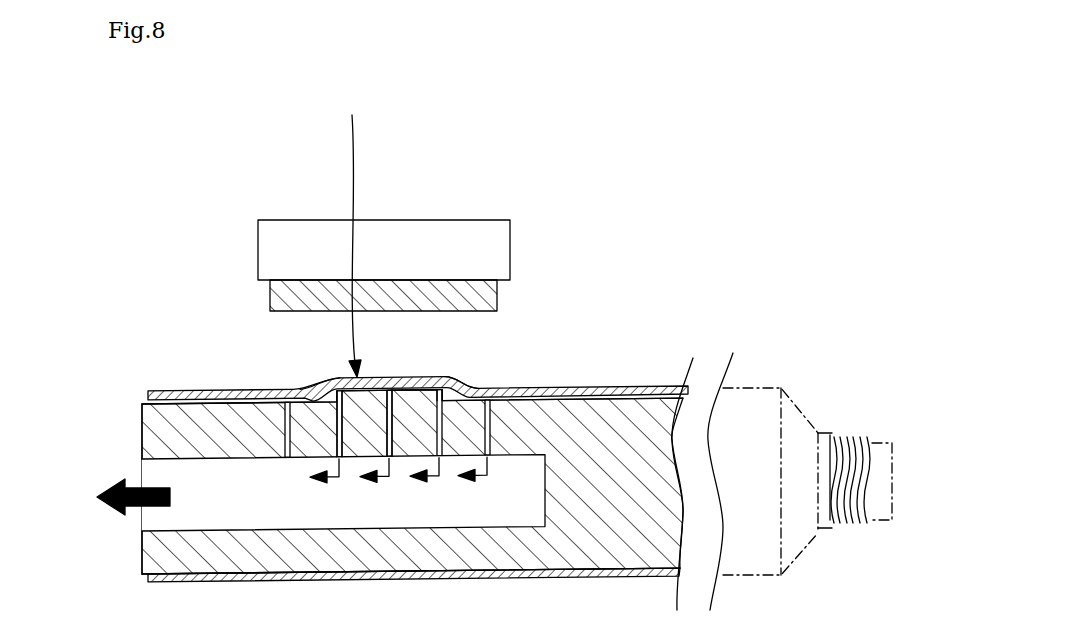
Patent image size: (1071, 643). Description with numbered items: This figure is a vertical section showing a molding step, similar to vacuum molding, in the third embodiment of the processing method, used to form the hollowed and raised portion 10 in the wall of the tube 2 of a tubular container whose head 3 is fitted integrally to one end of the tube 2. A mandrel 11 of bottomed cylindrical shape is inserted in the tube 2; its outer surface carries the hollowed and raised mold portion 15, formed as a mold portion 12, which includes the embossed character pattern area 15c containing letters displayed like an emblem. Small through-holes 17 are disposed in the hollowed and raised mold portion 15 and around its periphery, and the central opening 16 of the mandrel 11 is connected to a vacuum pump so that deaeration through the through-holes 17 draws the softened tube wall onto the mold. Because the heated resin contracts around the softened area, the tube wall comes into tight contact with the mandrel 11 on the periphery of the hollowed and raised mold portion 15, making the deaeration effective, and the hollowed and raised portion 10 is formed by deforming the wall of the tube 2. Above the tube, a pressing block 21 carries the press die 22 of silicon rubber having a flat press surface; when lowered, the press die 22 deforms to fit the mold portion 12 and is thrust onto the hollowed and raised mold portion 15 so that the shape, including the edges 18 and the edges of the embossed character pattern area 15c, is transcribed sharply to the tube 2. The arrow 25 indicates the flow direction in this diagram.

The tube 2 is at (590, 390).
The head 3 is at (833, 402).
The hollowed and raised portion 10 is at (350, 230).
The mandrel 11 is at (170, 427).
The hollowed and/or raised mold portion 12 is at (389, 423).
The hollowed and raised mold portion 15 is at (452, 385).
The embossed character pattern area 15c is at (425, 387).
The central opening 16 is at (141, 516).
The small through-holes 17 is at (401, 394).
The edges 18 is at (320, 407).
The pressing block 21 is at (425, 243).
The press die 22 is at (300, 297).
The flow direction 25 is at (121, 482).